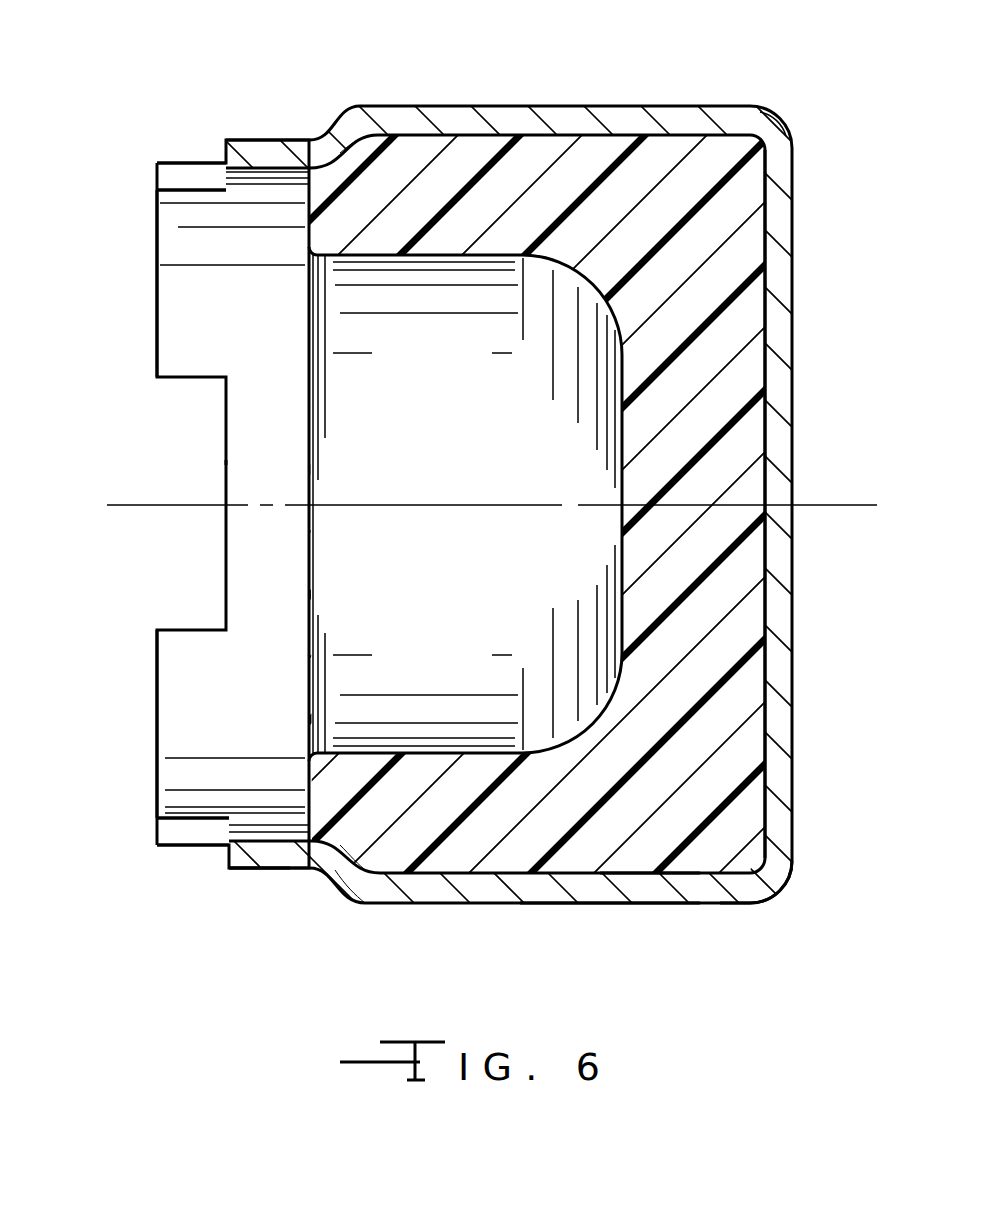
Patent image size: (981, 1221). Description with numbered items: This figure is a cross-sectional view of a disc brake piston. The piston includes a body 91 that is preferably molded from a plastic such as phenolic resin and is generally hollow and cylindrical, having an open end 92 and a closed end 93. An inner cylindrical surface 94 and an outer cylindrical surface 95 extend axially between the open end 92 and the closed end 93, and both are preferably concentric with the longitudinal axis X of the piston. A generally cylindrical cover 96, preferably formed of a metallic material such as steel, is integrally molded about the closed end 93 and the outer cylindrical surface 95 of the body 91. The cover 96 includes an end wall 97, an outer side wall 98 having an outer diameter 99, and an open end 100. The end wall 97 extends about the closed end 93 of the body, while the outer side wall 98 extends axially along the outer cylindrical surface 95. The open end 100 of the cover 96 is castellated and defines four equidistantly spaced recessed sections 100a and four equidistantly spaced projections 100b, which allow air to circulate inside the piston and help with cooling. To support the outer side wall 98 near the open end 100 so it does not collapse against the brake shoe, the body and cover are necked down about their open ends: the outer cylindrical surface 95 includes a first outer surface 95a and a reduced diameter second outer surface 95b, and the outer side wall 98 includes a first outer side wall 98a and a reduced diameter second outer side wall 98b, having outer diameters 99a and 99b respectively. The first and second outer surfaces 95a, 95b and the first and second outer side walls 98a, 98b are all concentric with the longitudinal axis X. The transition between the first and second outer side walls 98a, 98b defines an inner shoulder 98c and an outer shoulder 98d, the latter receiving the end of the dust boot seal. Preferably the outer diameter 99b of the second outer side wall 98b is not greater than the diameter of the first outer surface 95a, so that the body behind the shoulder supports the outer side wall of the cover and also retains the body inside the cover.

The body 91 is at (640, 170).
The open end 92 is at (305, 347).
The closed end 93 is at (767, 252).
The inner cylindrical surface 94 is at (453, 258).
The outer cylindrical surface 95 is at (560, 133).
The first outer surface 95a is at (453, 132).
The second outer surface 95b is at (322, 136).
The cover 96 is at (648, 892).
The end wall 97 is at (782, 395).
The outer side wall 98 is at (478, 897).
The first outer side wall 98a is at (417, 890).
The second outer side wall 98b is at (277, 853).
The inner shoulder 98c is at (353, 877).
The outer shoulder 98d is at (357, 867).
The outer diameter 99 is at (723, 903).
The outer diameter of the first outer side wall 99a is at (592, 903).
The outer diameter of the second outer side wall 99b is at (237, 870).
The open end of the cover 100 is at (158, 672).
The recessed sections 100a is at (224, 174).
The projections 100b is at (157, 344).
The longitudinal axis X is at (437, 500).